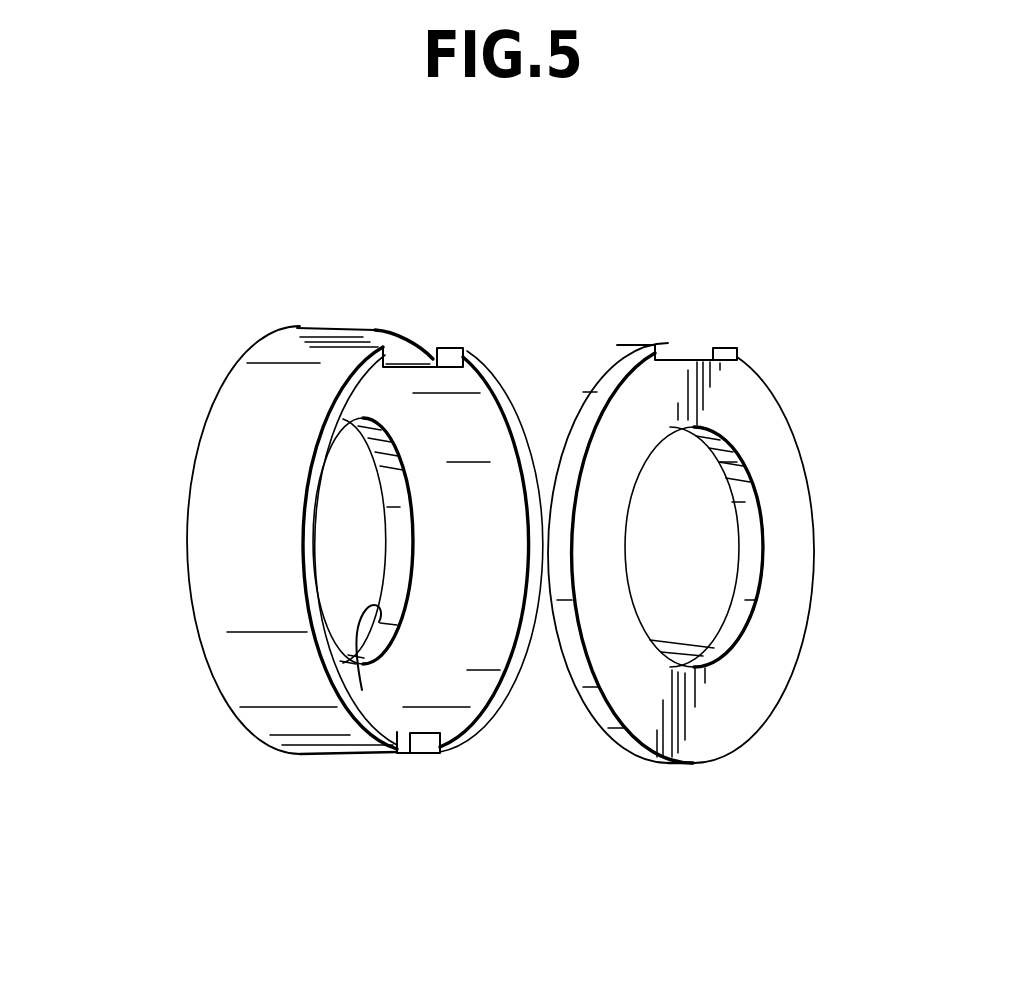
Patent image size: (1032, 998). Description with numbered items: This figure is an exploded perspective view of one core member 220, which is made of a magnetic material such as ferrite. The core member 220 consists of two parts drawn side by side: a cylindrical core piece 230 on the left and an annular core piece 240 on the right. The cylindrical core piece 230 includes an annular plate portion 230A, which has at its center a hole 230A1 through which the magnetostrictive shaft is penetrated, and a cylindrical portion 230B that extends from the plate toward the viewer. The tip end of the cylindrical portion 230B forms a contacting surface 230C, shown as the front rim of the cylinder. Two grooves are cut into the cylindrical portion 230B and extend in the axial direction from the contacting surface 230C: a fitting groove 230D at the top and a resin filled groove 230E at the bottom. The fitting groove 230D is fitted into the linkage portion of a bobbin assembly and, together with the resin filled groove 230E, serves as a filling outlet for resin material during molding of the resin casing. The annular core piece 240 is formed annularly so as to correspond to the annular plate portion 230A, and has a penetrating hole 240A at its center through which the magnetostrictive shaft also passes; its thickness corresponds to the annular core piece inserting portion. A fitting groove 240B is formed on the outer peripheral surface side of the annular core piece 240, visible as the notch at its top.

The core member 220 is at (246, 349).
The cylindrical core piece 230 is at (227, 677).
The annular plate portion 230A is at (425, 558).
The hole 230A1 is at (362, 690).
The cylindrical portion 230B is at (280, 723).
The contacting surface 230C is at (314, 456).
The fitting groove 230D is at (423, 347).
The resin filled groove 230E is at (427, 743).
The annular core piece 240 is at (753, 733).
The penetrating hole 240A is at (713, 644).
The fitting groove 240B is at (688, 356).